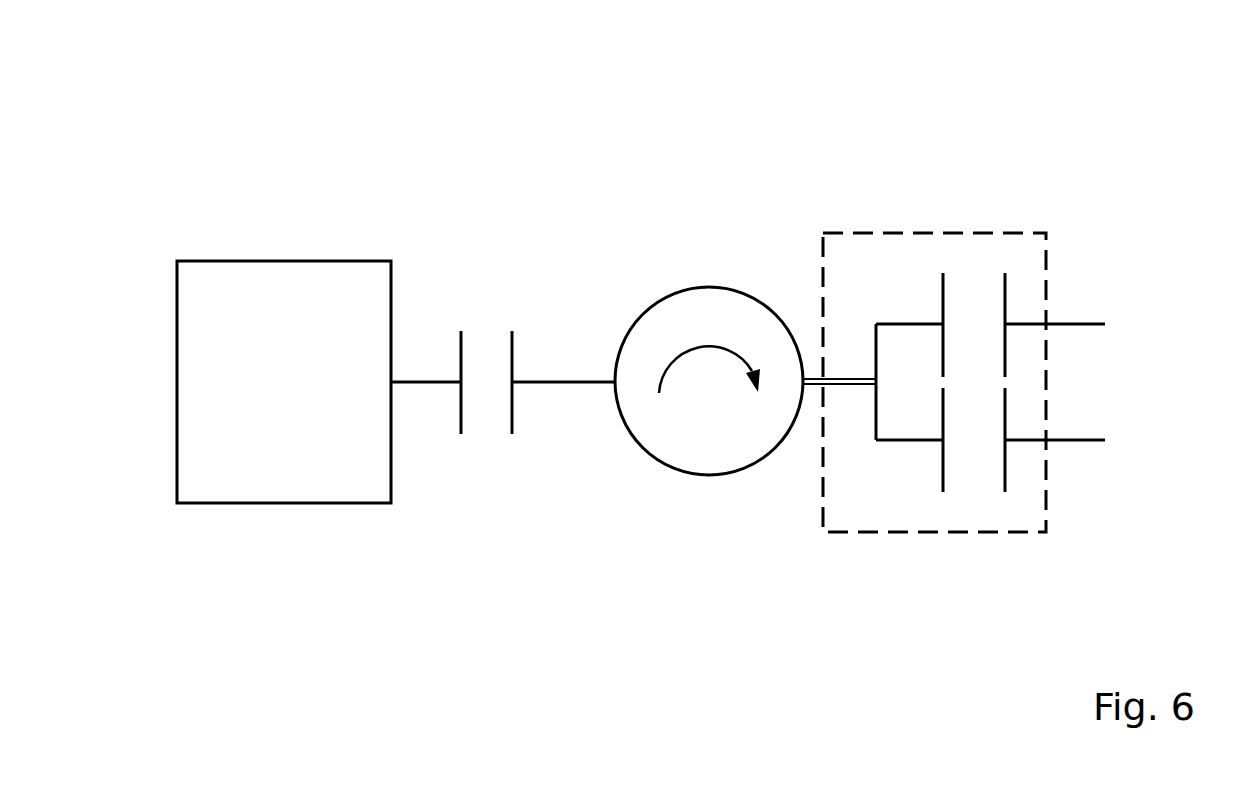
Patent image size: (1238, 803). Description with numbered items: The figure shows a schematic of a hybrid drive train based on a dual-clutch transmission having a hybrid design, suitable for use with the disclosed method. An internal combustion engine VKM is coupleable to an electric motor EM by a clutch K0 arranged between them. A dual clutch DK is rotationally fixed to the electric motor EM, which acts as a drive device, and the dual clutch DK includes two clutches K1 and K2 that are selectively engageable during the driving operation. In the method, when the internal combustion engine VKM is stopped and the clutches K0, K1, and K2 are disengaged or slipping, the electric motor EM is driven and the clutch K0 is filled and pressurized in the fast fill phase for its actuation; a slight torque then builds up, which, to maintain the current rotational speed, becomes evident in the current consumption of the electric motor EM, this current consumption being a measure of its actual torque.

The internal combustion engine VKM is at (285, 502).
The clutch K0 is at (485, 322).
The electric motor EM is at (708, 477).
The dual clutch DK is at (880, 232).
The clutch K1 is at (979, 260).
The clutch K2 is at (979, 505).